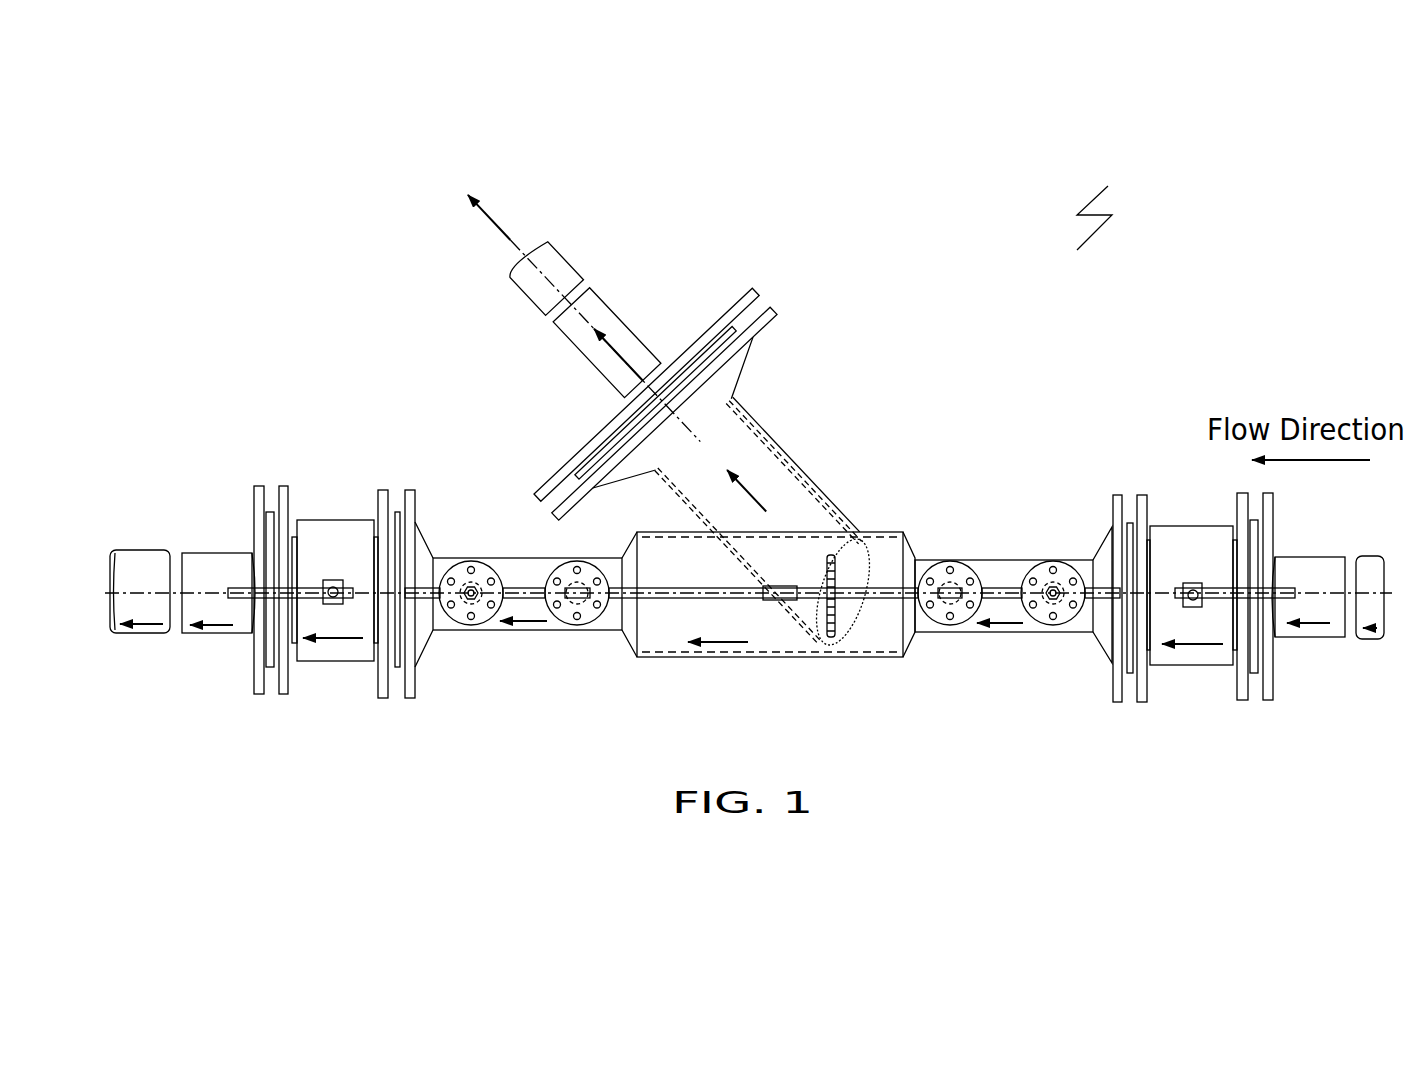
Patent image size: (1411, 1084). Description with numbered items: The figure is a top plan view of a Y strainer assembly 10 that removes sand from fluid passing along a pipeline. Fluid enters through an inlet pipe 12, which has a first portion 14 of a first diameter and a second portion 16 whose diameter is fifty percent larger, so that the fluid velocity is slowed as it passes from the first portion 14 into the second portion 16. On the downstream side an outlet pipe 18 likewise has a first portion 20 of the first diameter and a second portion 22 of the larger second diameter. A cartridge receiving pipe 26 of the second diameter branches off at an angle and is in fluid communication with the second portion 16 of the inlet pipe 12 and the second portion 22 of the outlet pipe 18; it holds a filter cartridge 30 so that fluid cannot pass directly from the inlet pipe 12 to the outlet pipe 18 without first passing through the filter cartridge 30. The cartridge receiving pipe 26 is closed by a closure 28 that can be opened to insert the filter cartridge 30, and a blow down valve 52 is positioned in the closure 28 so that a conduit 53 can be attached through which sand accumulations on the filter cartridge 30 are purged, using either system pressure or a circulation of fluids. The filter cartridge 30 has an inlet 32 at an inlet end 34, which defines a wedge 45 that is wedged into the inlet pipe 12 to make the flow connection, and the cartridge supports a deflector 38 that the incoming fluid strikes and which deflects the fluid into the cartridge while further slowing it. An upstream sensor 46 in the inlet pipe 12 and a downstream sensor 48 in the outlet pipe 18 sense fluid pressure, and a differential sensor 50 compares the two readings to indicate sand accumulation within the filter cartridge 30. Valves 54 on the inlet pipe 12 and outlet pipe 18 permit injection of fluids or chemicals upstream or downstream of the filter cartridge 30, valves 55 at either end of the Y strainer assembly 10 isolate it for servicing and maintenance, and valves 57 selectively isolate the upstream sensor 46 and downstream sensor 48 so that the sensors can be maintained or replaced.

The Y strainer assembly 10 is at (1114, 204).
The inlet pipe 12 is at (1040, 560).
The first portion of inlet pipe 14 is at (1017, 632).
The second portion of inlet pipe 16 is at (893, 655).
The outlet pipe 18 is at (483, 558).
The first portion of outlet pipe 20 is at (507, 630).
The second portion of outlet pipe 22 is at (648, 655).
The cartridge receiving pipe 26 is at (797, 462).
The closure 28 is at (755, 290).
The filter cartridge 30 is at (822, 495).
The inlet 32 is at (865, 562).
The inlet end 34 is at (840, 543).
The deflector 38 is at (823, 623).
The wedge 45 is at (847, 627).
The upstream sensor 46 is at (950, 566).
The downstream sensor 48 is at (580, 602).
The differential sensor 50 is at (783, 602).
The blow down valve 52 is at (700, 437).
The conduit 53 is at (597, 365).
The valves 54 is at (462, 613).
The valves 55 is at (333, 663).
The valves 57 is at (613, 623).